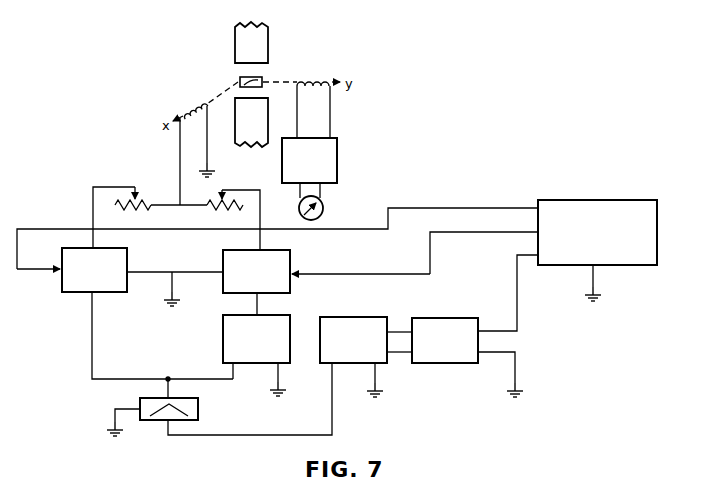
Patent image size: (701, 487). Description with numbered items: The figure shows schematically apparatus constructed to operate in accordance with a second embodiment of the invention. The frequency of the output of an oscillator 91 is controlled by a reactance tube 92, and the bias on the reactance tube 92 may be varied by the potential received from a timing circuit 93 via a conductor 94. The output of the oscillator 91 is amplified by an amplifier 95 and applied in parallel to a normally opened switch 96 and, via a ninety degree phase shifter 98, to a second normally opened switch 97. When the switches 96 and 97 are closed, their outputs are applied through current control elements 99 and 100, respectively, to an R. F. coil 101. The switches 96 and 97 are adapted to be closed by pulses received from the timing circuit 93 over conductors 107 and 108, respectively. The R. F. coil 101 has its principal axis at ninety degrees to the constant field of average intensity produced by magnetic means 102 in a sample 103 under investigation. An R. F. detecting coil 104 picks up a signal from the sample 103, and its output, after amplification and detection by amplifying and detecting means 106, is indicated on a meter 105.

The oscillator 91 is at (340, 363).
The reactance tube 92 is at (438, 365).
The timing circuit 93 is at (613, 267).
The conductor 94 is at (517, 275).
The amplifier 95 is at (200, 408).
The normally opened switch 96 is at (60, 277).
The normally opened switch 97 is at (292, 282).
The 90° phase shifter 98 is at (222, 347).
The current control element 99 is at (117, 185).
The current control element 100 is at (233, 187).
The R. F. coil 101 is at (195, 110).
The magnetic means 102 is at (270, 50).
The sample 103 is at (238, 82).
The R. F. detecting coil 104 is at (332, 78).
The meter 105 is at (323, 208).
The amplifying and detecting means 106 is at (338, 160).
The conductor 107 is at (337, 232).
The conductor 108 is at (430, 248).